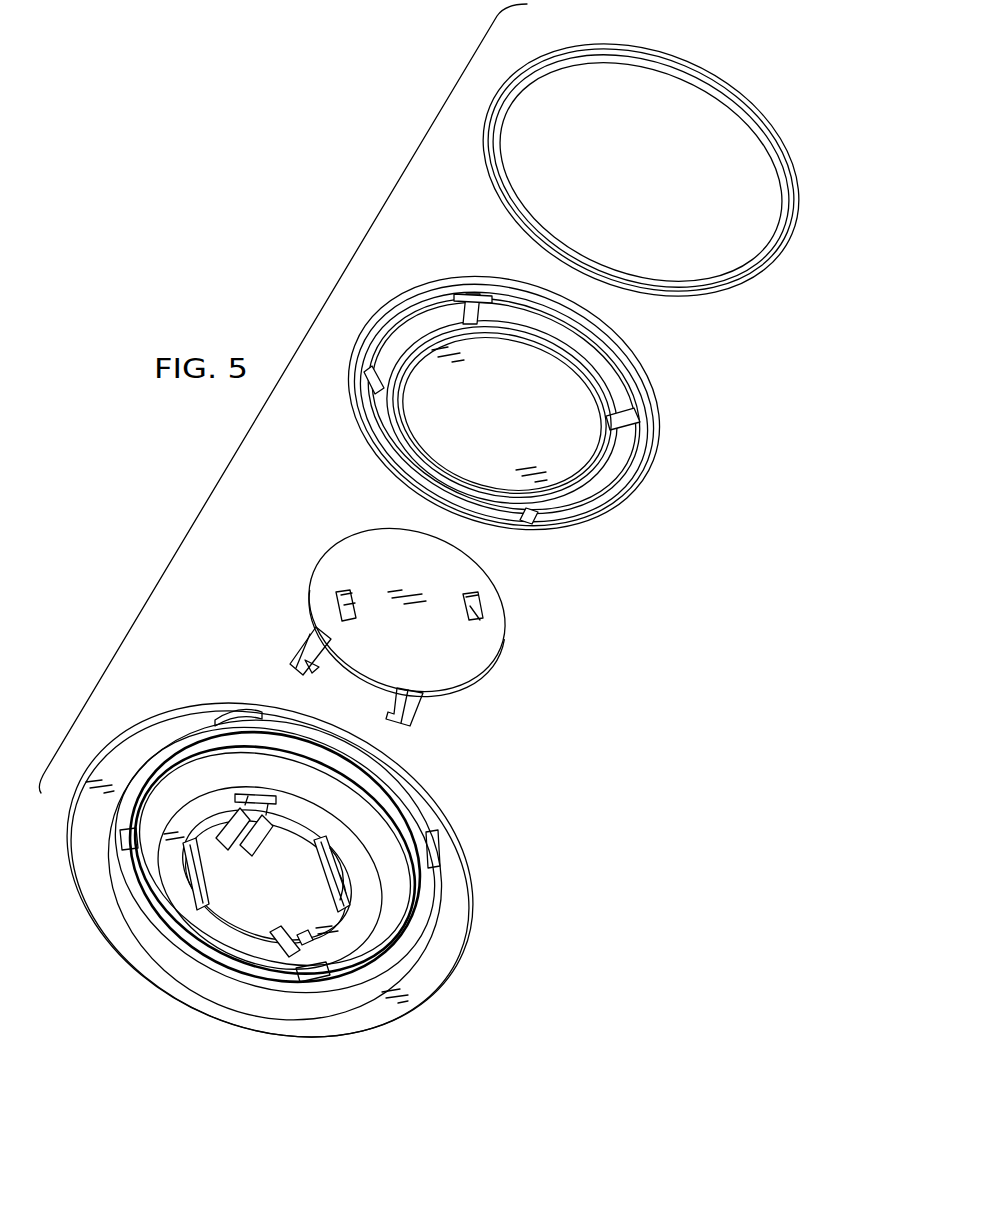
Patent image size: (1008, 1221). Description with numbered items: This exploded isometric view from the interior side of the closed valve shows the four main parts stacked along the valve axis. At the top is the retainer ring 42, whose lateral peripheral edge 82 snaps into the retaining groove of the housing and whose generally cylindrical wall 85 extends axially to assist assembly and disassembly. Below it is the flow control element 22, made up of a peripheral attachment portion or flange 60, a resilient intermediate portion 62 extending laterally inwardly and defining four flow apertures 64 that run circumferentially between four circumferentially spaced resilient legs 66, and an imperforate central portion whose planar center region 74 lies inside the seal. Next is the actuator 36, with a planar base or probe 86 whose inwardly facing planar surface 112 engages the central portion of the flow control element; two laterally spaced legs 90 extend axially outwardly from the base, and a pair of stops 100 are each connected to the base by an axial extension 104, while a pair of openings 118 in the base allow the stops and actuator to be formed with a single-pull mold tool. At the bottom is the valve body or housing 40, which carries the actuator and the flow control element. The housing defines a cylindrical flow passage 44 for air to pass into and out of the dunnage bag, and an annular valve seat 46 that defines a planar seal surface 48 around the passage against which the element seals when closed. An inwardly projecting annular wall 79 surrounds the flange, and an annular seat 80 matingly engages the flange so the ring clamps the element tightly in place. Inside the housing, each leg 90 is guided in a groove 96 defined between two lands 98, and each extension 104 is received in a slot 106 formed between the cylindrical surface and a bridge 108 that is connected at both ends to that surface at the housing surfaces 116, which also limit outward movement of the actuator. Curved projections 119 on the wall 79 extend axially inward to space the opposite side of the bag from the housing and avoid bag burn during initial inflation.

The retainer ring 42 is at (641, 171).
The cylindrical wall 85 is at (708, 78).
The lateral peripheral edge 82 is at (748, 108).
The flow control element 22 is at (532, 403).
The peripheral attachment portion or flange 60 is at (624, 504).
The intermediate portion 62 is at (612, 386).
The flow apertures 64 is at (408, 326).
The resilient legs 66 is at (467, 302).
The center region 74 is at (501, 412).
The actuator 36 is at (404, 613).
The base or probe 86 is at (370, 548).
The openings 118 is at (345, 603).
The axial extension 104 is at (305, 652).
The inwardly facing planar surface 112 is at (484, 655).
The stops 100 is at (309, 676).
The legs 90 is at (405, 712).
The valve body or housing 40 is at (297, 870).
The planar seal surface 48 is at (185, 810).
The annular wall 79 is at (135, 900).
The annular seat 80 is at (425, 900).
The flow passage 44 is at (270, 960).
The annular valve seat 46 is at (236, 920).
The groove 96 is at (249, 802).
The lands 98 is at (222, 830).
The housing surfaces 116 is at (258, 804).
The bridge 108 is at (183, 858).
The slot 106 is at (187, 893).
The curved projections 119 is at (243, 714).